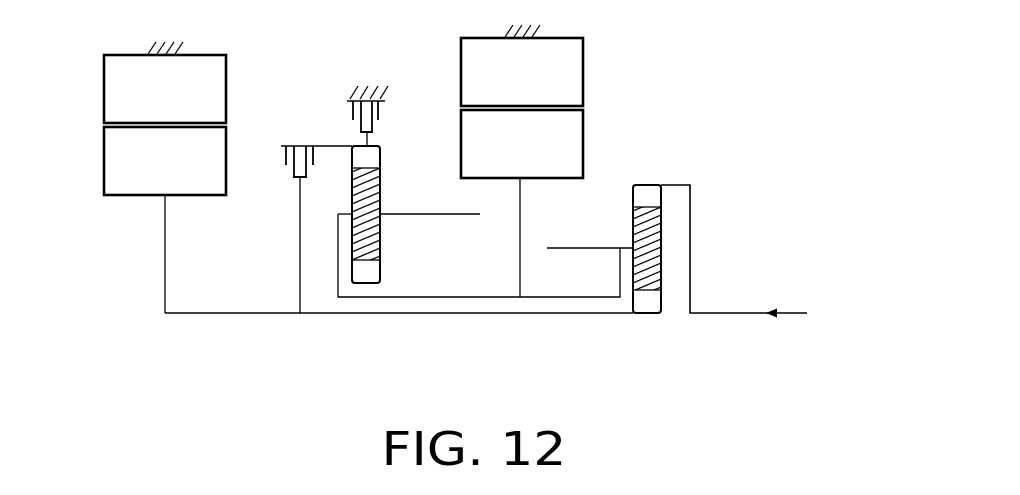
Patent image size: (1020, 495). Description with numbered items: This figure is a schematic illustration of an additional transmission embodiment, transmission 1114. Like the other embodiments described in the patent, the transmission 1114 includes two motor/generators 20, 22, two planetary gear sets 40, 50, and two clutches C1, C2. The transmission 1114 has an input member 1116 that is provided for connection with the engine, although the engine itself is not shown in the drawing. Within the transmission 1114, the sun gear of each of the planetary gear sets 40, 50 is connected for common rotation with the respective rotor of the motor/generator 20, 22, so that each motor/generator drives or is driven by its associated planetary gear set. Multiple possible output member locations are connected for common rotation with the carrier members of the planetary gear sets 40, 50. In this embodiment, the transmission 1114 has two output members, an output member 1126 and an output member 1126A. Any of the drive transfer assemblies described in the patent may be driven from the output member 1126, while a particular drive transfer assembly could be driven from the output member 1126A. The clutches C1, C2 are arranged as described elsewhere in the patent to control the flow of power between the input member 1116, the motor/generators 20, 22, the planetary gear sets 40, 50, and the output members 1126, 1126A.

The motor/generator 20 is at (142, 212).
The motor/generator 22 is at (597, 123).
The clutch C1 is at (395, 110).
The clutch C2 is at (276, 161).
The planetary gear set 50 is at (412, 237).
The planetary gear set 40 is at (670, 255).
The transmission 1114 is at (650, 110).
The input member 1116 is at (757, 313).
The output member 1126 is at (570, 250).
The output member 1126A is at (398, 217).